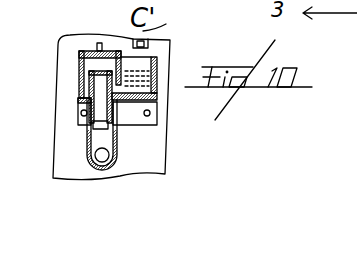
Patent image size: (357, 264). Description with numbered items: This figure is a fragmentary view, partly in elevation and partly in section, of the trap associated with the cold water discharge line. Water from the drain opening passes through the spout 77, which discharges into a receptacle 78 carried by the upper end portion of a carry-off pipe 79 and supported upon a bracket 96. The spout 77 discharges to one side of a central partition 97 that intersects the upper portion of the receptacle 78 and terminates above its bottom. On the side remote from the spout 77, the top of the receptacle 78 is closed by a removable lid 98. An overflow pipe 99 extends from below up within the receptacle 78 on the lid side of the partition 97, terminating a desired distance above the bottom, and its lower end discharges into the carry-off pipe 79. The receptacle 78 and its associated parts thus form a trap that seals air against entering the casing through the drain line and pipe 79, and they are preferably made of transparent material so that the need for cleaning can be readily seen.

The spout 77 is at (146, 41).
The receptacle 78 is at (79, 67).
The carry-off pipe 79 is at (100, 158).
The bracket 96 is at (151, 121).
The central partition 97 is at (121, 68).
The removable lid 98 is at (90, 50).
The overflow pipe 99 is at (89, 88).